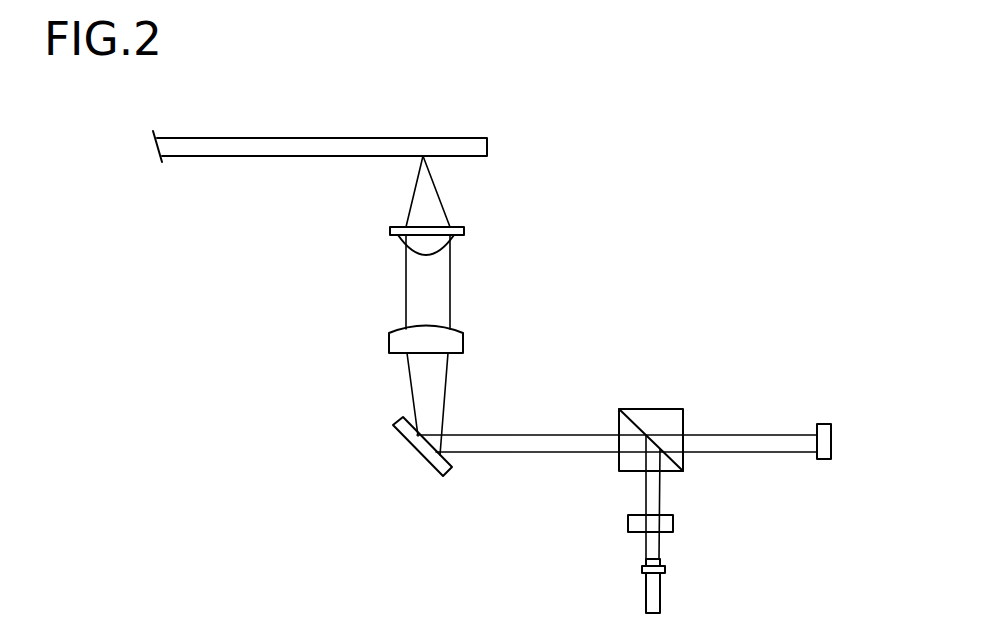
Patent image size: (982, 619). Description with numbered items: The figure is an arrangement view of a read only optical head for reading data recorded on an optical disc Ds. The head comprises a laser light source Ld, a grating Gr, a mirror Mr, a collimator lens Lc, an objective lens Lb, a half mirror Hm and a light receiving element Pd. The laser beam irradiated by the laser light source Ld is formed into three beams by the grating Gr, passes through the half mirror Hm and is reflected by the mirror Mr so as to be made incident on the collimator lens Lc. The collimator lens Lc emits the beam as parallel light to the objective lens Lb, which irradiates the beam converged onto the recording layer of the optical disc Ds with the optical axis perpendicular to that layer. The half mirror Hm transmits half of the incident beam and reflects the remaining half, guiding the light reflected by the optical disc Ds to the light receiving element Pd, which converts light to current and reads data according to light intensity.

The optical disc Ds is at (278, 145).
The objective lens Lb is at (428, 243).
The collimator lens Lc is at (410, 338).
The mirror Mr is at (420, 450).
The half mirror Hm is at (661, 420).
The light receiving element Pd is at (831, 442).
The grating Gr is at (670, 522).
The laser light source Ld is at (652, 592).